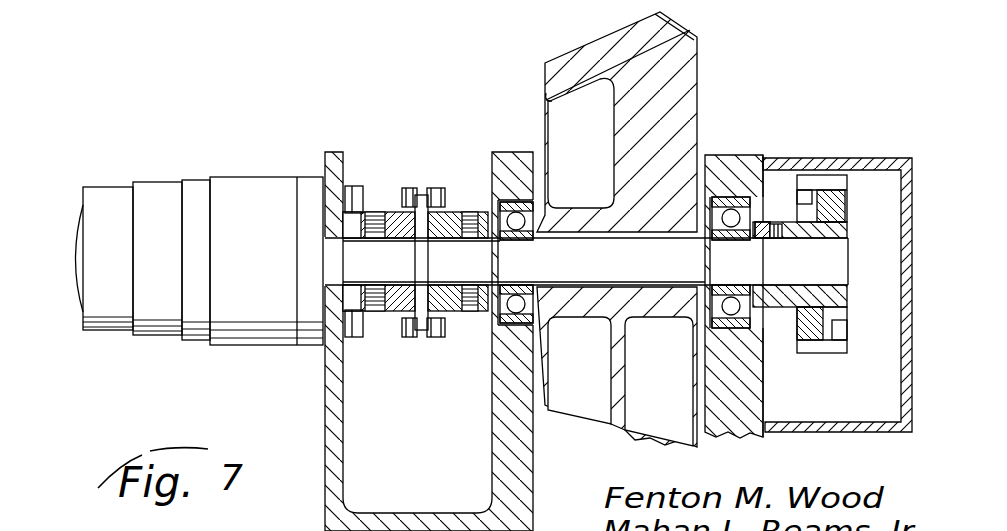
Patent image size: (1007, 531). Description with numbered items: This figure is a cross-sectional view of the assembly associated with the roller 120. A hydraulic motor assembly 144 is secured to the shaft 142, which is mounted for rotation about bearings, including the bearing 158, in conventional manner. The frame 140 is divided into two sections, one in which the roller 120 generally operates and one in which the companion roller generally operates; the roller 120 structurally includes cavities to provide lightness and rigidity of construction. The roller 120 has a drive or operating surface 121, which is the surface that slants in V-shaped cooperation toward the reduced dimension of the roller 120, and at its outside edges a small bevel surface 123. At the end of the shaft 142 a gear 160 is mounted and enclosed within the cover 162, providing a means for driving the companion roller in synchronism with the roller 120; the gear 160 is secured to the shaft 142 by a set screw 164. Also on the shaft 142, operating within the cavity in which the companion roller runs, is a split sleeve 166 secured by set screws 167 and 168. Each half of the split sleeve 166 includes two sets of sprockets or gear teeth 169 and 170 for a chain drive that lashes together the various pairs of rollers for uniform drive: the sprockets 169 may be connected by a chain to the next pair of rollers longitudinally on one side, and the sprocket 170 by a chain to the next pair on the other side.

The roller 120 is at (655, 227).
The drive or operating surface 121 is at (618, 27).
The bevel surface 123 is at (680, 22).
The frame 140 is at (429, 309).
The shaft 142 is at (442, 263).
The hydraulic motor assembly 144 is at (240, 178).
The bearing 158 is at (725, 337).
The gear 160 is at (827, 350).
The cover 162 is at (870, 160).
The set screw 164 is at (773, 217).
The split sleeve 166 is at (385, 286).
The set screw 167 is at (379, 211).
The set screw 168 is at (470, 206).
The sprocket 169 is at (410, 188).
The sprocket 170 is at (440, 188).